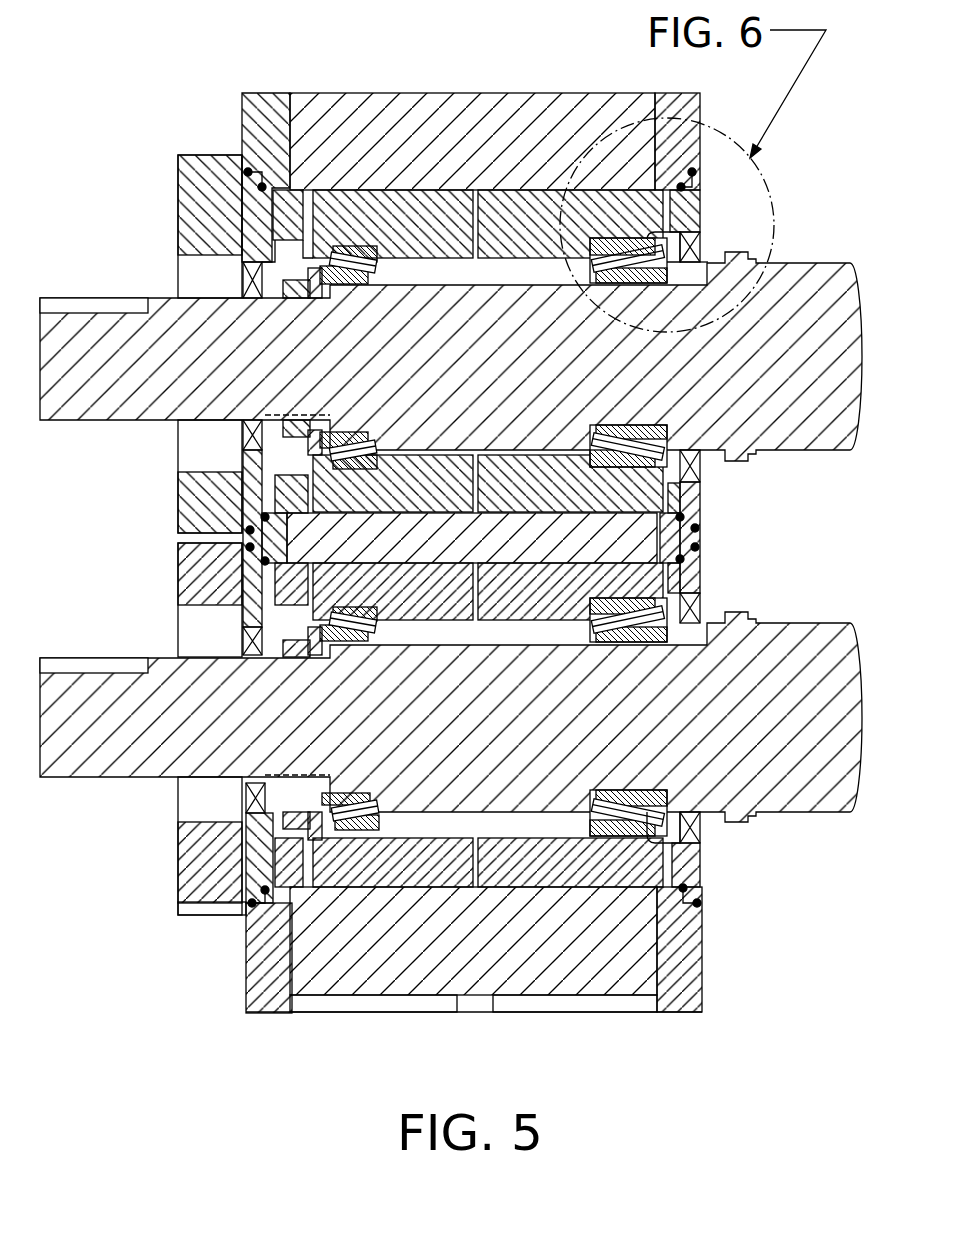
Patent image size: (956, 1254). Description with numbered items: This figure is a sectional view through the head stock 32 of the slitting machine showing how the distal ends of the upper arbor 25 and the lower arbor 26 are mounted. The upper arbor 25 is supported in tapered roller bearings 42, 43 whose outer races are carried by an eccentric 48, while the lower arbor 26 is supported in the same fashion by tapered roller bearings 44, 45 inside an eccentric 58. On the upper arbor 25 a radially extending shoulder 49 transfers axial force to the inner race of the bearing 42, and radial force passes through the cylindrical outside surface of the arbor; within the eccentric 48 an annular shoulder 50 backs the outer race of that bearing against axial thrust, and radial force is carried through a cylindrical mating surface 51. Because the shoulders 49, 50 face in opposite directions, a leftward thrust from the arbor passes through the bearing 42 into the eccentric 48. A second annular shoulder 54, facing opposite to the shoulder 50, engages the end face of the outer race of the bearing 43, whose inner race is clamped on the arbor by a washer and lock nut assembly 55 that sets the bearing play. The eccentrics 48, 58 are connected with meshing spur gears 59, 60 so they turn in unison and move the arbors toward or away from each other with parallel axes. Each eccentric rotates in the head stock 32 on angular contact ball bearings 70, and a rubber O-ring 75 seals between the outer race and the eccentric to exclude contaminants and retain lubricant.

The upper arbor 25 is at (802, 263).
The lower arbor 26 is at (790, 623).
The head stock 32 is at (500, 93).
The tapered roller bearing 42 is at (576, 268).
The tapered roller bearing 43 is at (388, 266).
The tapered roller bearing 44 is at (588, 628).
The tapered roller bearing 45 is at (378, 628).
The eccentric 48 is at (700, 210).
The shoulder 49 is at (650, 247).
The annular shoulder 50 is at (603, 240).
The cylindrical mating surface 51 is at (630, 240).
The annular shoulder 54 is at (357, 247).
The washer and lock nut assembly 55 is at (268, 278).
The eccentric 58 is at (700, 560).
The spur gear 59 is at (205, 155).
The spur gear 60 is at (185, 910).
The angular contact ball bearings 70 is at (700, 112).
The rubber O-ring 75 is at (698, 176).